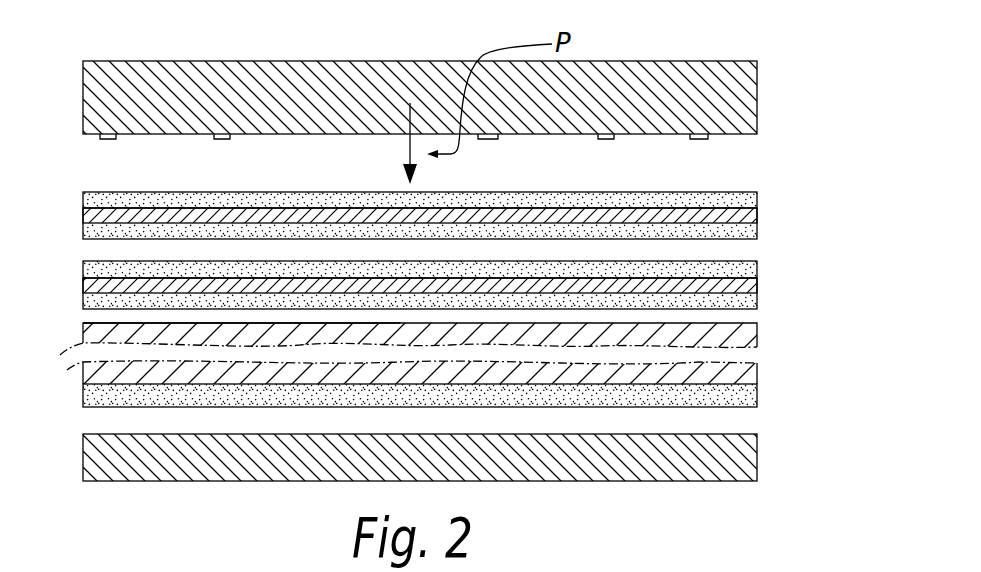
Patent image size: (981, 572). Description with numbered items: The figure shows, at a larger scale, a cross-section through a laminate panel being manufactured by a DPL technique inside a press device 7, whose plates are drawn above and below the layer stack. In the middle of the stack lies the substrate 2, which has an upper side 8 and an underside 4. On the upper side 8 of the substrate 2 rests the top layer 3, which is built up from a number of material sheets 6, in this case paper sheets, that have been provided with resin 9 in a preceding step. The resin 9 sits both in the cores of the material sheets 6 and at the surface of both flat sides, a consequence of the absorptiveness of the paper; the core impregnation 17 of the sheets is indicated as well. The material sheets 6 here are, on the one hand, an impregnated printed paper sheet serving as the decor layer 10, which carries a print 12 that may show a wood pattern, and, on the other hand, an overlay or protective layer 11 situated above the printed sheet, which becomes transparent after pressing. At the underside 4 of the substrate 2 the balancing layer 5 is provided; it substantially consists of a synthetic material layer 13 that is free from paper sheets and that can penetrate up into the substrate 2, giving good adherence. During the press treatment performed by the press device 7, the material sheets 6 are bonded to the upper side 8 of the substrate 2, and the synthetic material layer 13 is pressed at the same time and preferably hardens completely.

The press device 7 is at (704, 49).
The top layer 3 is at (57, 311).
The overlay or protective layer 11 is at (767, 192).
The decor layer 10 is at (767, 261).
The print 12 is at (177, 279).
The material sheets 6 is at (345, 294).
The resin 9 is at (420, 268).
The core impregnation 17 is at (712, 277).
The substrate 2 is at (742, 337).
The upper side of the substrate 8 is at (108, 323).
The synthetic material layer 13 is at (78, 372).
The underside of the substrate 4 is at (268, 385).
The balancing layer 5 is at (762, 398).